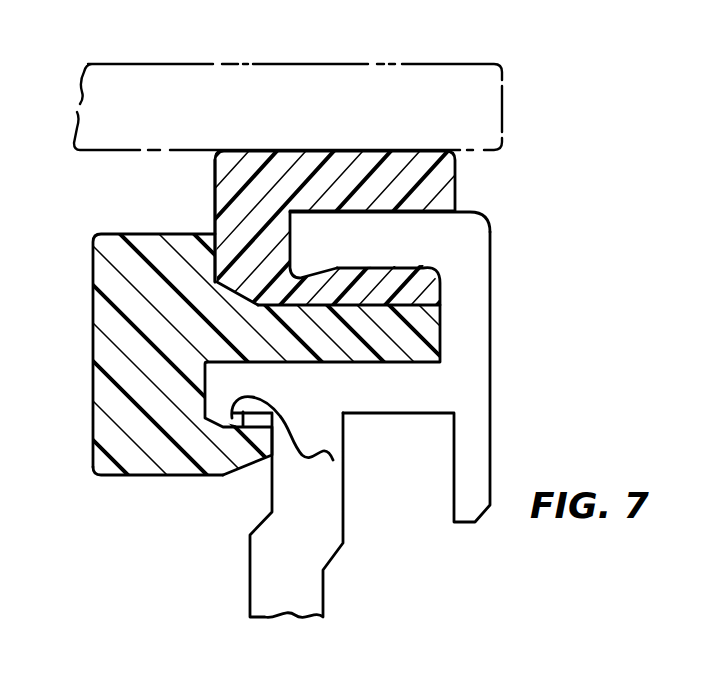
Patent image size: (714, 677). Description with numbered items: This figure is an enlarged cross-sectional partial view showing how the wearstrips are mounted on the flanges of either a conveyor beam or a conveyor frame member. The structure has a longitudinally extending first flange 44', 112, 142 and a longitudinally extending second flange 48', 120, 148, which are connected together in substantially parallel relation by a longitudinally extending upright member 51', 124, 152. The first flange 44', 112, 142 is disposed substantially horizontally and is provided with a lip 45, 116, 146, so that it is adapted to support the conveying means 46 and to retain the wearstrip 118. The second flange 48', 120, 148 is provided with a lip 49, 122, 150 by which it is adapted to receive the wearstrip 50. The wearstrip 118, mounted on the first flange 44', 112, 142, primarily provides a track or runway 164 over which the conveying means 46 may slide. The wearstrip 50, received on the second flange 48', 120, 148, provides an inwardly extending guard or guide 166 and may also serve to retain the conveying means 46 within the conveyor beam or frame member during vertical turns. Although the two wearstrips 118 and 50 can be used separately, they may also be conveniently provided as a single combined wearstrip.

The conveying means 46 is at (196, 64).
The track or runway 164 is at (380, 151).
The wearstrip 118 is at (214, 196).
The guard or guide 166 is at (95, 342).
The wearstrip 50 is at (145, 476).
The first flange 44' is at (463, 255).
The first flange 112 is at (463, 255).
The first flange 142 is at (388, 233).
The lip 45 is at (460, 245).
The lip 116 is at (460, 245).
The lip 146 is at (332, 256).
The upright member 51' is at (422, 333).
The upright member 124 is at (422, 333).
The upright member 152 is at (467, 333).
The second flange 48' is at (488, 377).
The second flange 120 is at (488, 377).
The second flange 148 is at (395, 392).
The lip 49 is at (352, 507).
The lip 122 is at (352, 507).
The lip 150 is at (327, 455).